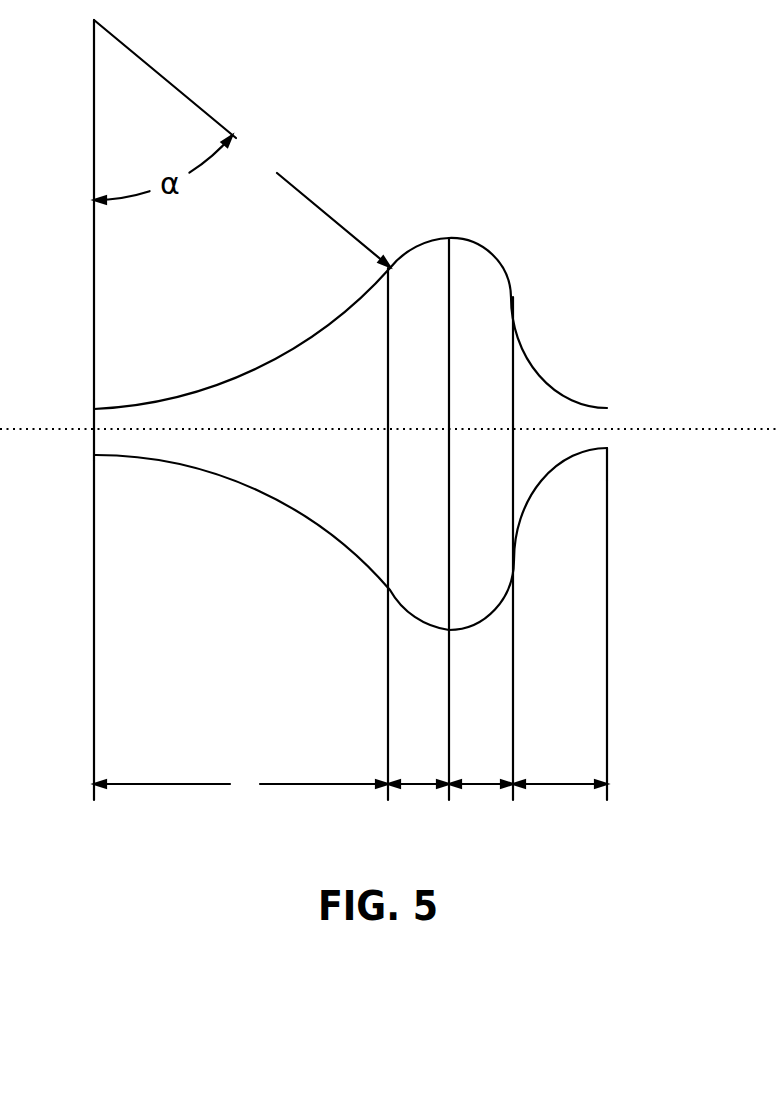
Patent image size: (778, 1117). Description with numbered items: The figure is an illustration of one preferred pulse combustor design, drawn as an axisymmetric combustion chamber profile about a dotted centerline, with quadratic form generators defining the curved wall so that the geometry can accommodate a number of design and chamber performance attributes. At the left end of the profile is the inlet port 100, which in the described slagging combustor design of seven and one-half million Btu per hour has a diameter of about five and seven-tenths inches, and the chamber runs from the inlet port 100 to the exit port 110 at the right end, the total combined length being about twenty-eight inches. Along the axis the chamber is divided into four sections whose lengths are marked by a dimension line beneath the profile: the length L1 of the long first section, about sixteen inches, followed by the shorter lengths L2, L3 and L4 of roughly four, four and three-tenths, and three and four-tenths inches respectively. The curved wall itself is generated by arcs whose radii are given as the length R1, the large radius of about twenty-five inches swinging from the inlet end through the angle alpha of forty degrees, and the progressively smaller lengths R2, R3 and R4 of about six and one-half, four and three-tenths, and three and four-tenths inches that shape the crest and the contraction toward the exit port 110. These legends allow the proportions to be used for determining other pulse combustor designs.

The inlet port 100 is at (98, 429).
The trailing edge of airfoil profile 110 is at (606, 428).
The length R1 is at (242, 214).
The length R2 is at (393, 271).
The length R3 is at (492, 260).
The length R4 is at (449, 297).
The length L1 is at (241, 786).
The length L2 is at (410, 784).
The length L3 is at (474, 784).
The length L4 is at (551, 784).